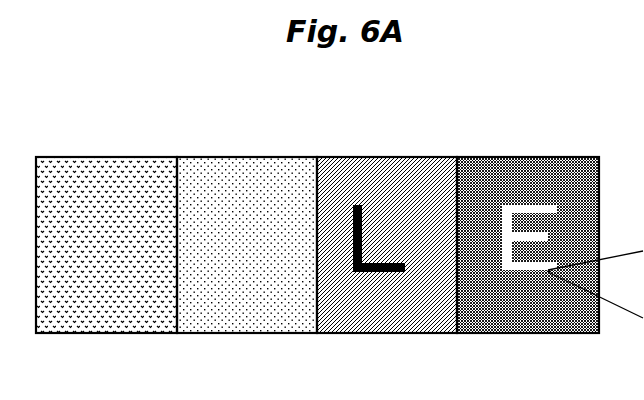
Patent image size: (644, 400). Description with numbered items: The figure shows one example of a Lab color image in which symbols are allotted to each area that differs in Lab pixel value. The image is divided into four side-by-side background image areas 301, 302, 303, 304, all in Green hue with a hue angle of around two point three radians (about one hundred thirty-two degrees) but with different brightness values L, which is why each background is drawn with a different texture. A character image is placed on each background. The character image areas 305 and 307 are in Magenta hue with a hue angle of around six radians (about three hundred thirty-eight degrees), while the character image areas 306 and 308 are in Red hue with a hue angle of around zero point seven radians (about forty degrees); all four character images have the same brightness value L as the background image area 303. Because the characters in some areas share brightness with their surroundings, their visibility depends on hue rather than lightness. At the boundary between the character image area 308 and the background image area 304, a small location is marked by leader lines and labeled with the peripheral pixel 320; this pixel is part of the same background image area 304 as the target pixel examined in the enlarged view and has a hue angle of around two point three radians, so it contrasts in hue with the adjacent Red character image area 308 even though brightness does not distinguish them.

The background image area 301 is at (123, 163).
The background image area 302 is at (272, 163).
The background image area 303 is at (420, 163).
The background image area 304 is at (580, 160).
The character image area 305 is at (91, 203).
The character image area 306 is at (233, 213).
The character image area 307 is at (351, 205).
The character image area 308 is at (522, 205).
The peripheral pixel 320 is at (643, 318).